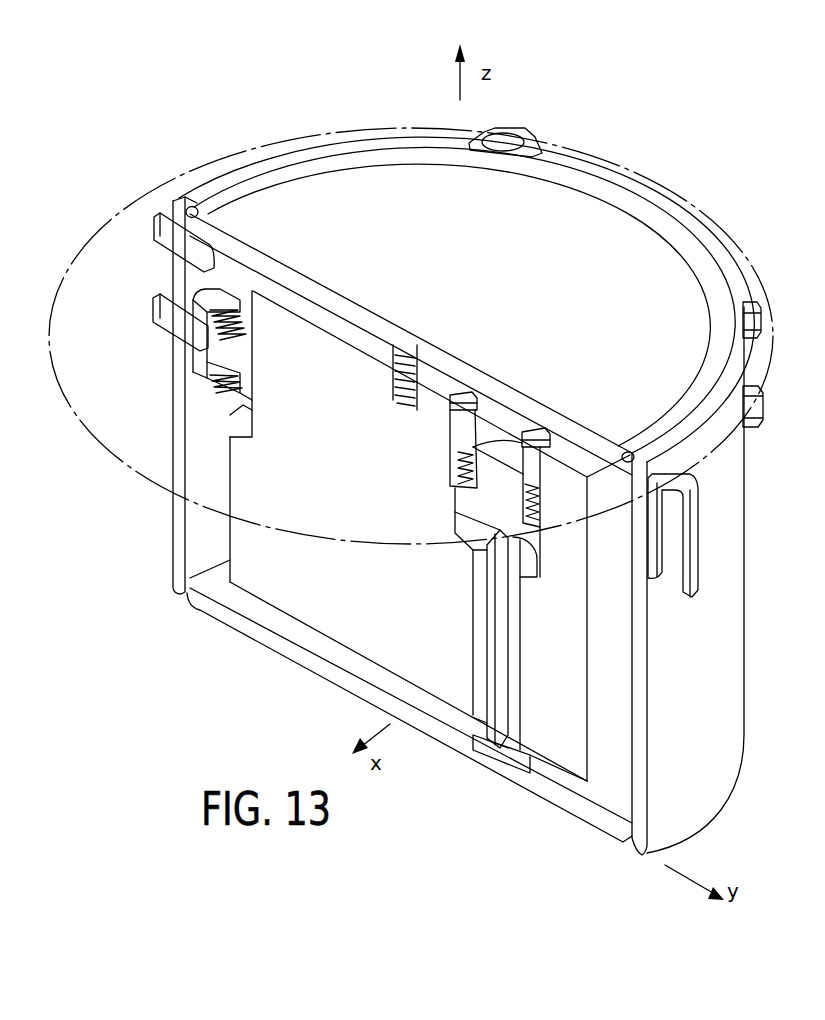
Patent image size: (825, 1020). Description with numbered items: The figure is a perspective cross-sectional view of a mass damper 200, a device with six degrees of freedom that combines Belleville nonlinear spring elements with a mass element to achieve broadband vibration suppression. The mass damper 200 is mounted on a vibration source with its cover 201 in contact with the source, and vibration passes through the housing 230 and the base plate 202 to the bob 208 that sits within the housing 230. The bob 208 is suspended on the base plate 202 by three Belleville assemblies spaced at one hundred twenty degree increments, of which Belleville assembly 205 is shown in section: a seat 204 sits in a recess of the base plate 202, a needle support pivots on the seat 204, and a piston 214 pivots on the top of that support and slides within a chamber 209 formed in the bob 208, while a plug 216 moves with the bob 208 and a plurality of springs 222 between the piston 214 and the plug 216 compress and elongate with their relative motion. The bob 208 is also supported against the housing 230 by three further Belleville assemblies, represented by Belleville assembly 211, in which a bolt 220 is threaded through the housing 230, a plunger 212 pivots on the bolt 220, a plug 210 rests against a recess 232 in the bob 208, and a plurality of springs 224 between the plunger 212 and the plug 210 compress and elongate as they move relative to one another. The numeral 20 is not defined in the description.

The mass damper 200 is at (624, 117).
The cover 201 is at (305, 163).
The base plate 202 is at (203, 613).
The seat 204 is at (502, 760).
The Belleville assembly 205 is at (470, 622).
The bob 208 is at (317, 593).
The chamber 209 is at (545, 551).
The plug 210 is at (247, 395).
The Belleville assembly 211 is at (183, 278).
The plunger 212 is at (197, 352).
The piston 214 is at (547, 517).
The plug 216 is at (545, 453).
The bolt 220 is at (153, 323).
The plurality of springs 222 is at (545, 493).
The plurality of springs 224 is at (215, 381).
The housing 230 is at (744, 608).
The recess 232 is at (230, 427).
The slot bottom block 20 is at (490, 712).